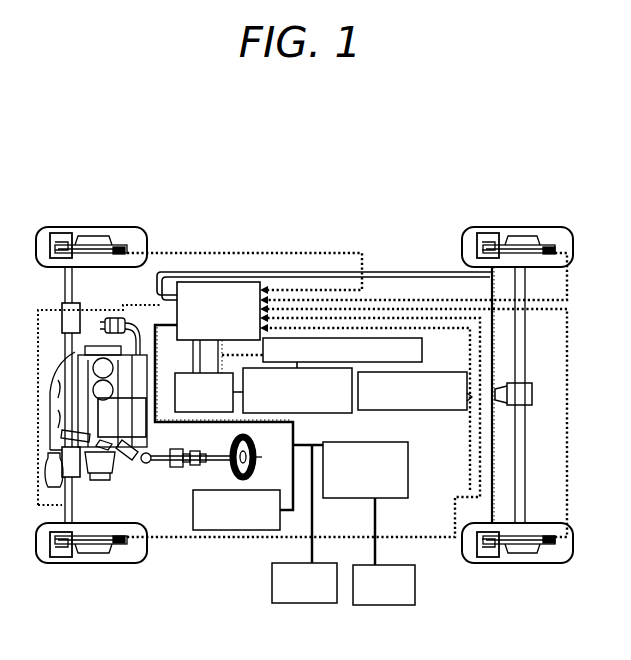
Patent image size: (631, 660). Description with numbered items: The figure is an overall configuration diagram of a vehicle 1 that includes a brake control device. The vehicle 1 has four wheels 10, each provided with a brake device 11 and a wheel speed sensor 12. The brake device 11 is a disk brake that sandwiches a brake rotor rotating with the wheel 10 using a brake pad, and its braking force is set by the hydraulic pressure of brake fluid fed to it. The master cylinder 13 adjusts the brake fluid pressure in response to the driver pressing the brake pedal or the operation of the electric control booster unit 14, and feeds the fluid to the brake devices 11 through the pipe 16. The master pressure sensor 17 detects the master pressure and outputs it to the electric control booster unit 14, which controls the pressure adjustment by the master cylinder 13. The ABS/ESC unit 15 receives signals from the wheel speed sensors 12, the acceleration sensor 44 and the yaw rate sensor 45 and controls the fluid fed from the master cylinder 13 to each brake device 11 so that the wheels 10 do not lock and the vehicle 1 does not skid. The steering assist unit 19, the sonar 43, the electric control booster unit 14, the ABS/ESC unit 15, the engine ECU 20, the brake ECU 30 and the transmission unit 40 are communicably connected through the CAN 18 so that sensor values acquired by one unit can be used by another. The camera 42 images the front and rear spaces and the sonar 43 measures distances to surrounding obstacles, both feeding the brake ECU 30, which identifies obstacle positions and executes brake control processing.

The vehicle 1 is at (292, 207).
The wheel 10 is at (80, 226).
The brake device 11 is at (46, 244).
The wheel speed sensor 12 is at (122, 244).
The master cylinder 13 is at (184, 376).
The electric control booster unit 14 is at (340, 414).
The ABS/ESC unit 15 is at (214, 281).
The pipe 16 is at (386, 272).
The master pressure sensor 17 is at (424, 353).
The CAN 18 is at (257, 421).
The steering assist unit 19 is at (176, 462).
The engine ECU 20 is at (188, 448).
The brake ECU 30 is at (410, 482).
The transmission unit 40 is at (193, 508).
The camera 42 is at (386, 605).
The sonar 43 is at (298, 603).
The acceleration sensor 44 is at (417, 411).
The yaw rate sensor 45 is at (434, 410).